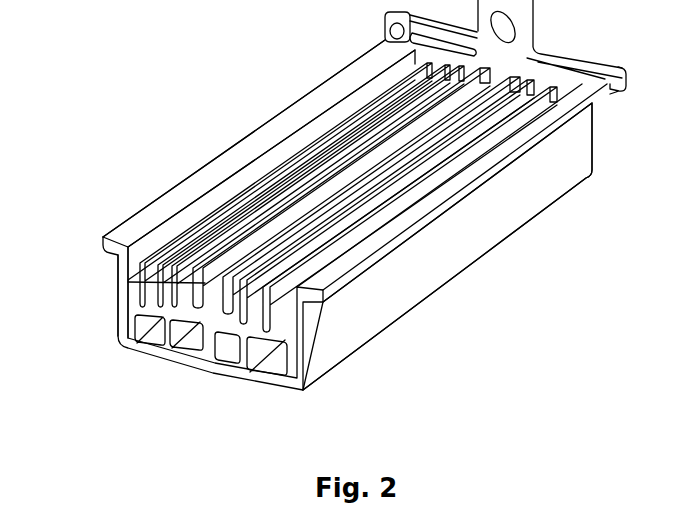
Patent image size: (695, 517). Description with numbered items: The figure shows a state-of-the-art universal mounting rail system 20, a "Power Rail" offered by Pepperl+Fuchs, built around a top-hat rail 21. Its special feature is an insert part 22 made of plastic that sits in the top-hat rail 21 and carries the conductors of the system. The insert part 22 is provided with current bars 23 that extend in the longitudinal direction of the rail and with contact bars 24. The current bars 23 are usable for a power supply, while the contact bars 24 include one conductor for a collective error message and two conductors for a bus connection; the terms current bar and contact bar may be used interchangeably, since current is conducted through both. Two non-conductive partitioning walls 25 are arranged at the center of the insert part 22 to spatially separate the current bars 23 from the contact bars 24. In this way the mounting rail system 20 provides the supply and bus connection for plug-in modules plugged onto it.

The universal mounting rail system 20 is at (512, 208).
The top-hat rail 21 is at (434, 265).
The insert part 22 is at (140, 352).
The current bars 23 is at (268, 305).
The contact bars 24 is at (130, 287).
The partitioning walls 25 is at (217, 290).